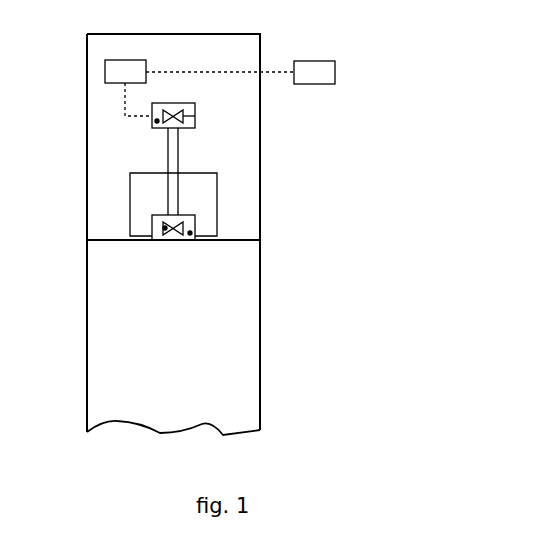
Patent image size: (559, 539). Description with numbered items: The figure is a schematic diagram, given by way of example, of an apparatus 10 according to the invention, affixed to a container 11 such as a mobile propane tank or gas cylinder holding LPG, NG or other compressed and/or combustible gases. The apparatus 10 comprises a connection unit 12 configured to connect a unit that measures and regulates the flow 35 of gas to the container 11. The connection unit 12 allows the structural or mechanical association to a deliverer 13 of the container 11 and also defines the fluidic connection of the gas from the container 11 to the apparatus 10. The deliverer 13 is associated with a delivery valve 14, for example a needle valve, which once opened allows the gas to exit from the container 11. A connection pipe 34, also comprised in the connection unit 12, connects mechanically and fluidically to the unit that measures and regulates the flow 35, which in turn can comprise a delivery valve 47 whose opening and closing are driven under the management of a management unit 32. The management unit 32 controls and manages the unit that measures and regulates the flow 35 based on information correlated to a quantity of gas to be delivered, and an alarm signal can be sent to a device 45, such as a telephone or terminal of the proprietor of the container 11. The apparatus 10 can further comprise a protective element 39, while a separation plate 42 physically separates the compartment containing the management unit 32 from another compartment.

The apparatus 10 is at (67, 148).
The container 11 is at (243, 355).
The connection unit 12 is at (227, 188).
The deliverer 13 is at (190, 233).
The delivery valve 14 is at (165, 228).
The management unit 32 is at (125, 72).
The connection pipe 34 is at (173, 134).
The unit that measures and regulates the flow 35 is at (157, 121).
The protective element 39 is at (87, 198).
The separation plate 42 is at (0, 508).
The device 45 is at (315, 72).
The delivery valve 47 is at (195, 116).